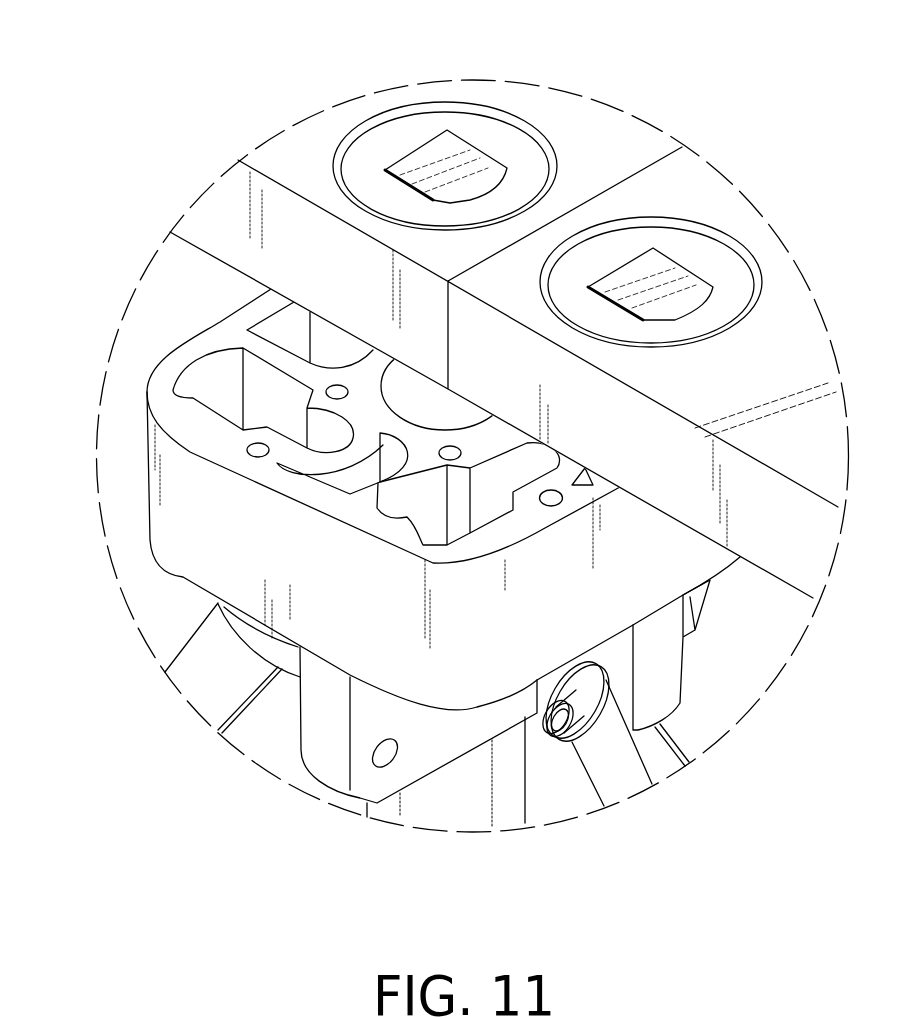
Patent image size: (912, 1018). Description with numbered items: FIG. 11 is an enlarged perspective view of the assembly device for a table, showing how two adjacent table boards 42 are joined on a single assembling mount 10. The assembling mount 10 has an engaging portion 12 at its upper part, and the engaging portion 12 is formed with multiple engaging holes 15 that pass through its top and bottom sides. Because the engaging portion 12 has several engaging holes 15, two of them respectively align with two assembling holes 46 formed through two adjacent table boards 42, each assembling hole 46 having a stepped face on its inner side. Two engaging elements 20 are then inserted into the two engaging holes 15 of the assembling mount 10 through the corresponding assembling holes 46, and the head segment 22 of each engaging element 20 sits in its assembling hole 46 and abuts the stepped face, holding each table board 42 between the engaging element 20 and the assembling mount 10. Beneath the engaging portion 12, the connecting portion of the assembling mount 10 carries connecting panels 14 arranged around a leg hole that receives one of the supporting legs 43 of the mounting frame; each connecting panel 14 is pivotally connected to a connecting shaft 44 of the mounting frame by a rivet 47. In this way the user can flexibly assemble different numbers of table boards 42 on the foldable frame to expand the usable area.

The assembling mount 10 is at (112, 397).
The engaging portion 12 is at (132, 479).
The connecting panel 14 is at (320, 727).
The engaging hole 15 is at (190, 397).
The engaging element 20 is at (451, 78).
The head segment 22 is at (503, 133).
The table board 42 is at (192, 261).
The supporting leg 43 is at (460, 803).
The connecting shaft 44 is at (207, 662).
The assembling hole 46 is at (339, 142).
The rivet 47 is at (580, 710).